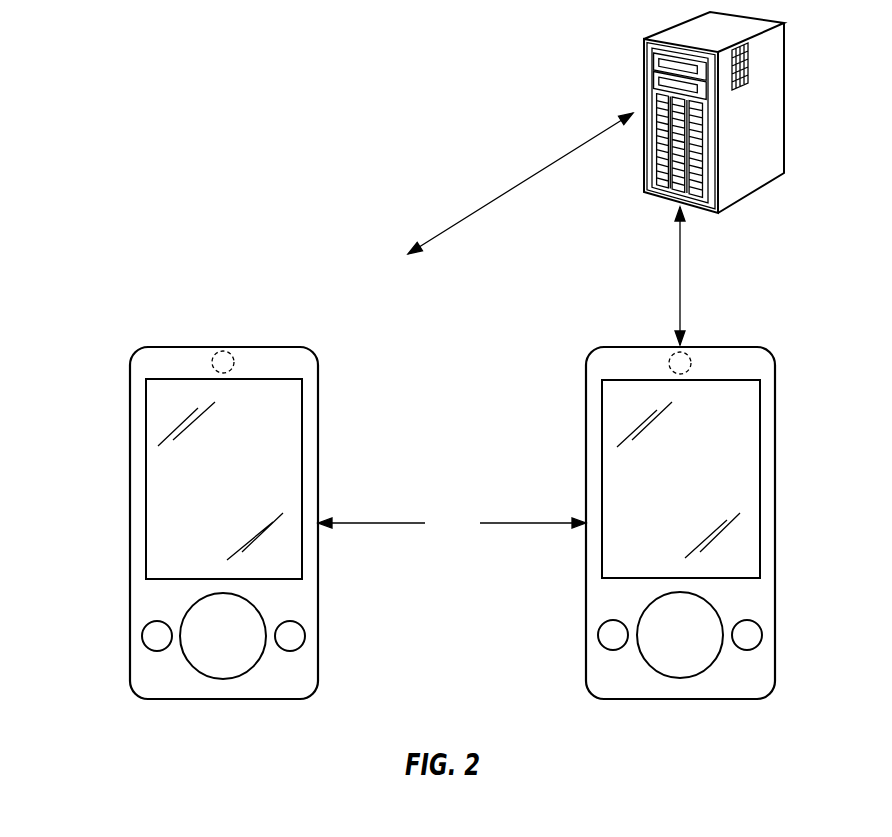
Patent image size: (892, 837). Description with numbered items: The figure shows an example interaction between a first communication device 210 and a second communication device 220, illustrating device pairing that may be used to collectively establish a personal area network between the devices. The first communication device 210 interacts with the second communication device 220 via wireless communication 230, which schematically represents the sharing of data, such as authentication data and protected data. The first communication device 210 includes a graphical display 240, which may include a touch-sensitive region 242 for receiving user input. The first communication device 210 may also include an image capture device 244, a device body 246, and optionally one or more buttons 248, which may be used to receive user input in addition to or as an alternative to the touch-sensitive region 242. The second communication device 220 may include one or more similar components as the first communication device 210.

The first communication device 210 is at (304, 306).
The second communication device 220 is at (730, 306).
The wireless communication 230 is at (452, 526).
The graphical display 240 is at (303, 482).
The touch-sensitive region 242 is at (245, 492).
The image capture device 244 is at (220, 352).
The device body 246 is at (318, 373).
The buttons 248 is at (182, 616).